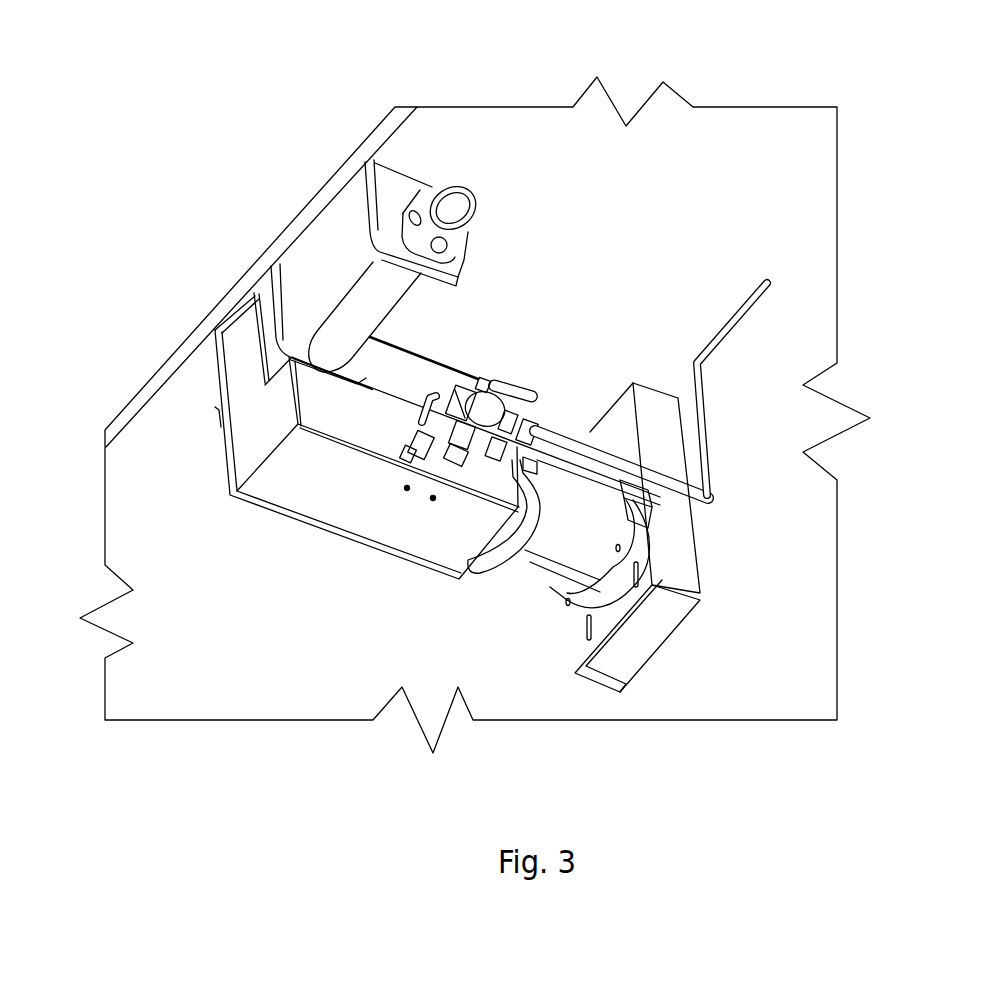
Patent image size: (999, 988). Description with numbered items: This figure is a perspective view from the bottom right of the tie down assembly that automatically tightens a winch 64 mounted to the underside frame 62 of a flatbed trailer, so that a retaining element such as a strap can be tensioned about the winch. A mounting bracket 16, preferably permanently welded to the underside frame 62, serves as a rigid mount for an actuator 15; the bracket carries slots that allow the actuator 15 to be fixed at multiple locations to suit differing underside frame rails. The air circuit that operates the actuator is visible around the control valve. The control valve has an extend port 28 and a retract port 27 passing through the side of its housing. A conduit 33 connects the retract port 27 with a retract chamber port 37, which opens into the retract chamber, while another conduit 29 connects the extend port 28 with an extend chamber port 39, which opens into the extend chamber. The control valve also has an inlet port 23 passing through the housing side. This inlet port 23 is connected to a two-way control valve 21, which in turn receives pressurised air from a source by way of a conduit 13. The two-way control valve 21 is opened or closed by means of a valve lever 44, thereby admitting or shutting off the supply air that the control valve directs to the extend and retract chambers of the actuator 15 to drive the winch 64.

The conduit 13 is at (778, 293).
The actuator 15 is at (580, 545).
The mounting bracket 16 is at (700, 555).
The two-way control valve 21 is at (483, 408).
The inlet port 23 is at (441, 457).
The retract port 27 is at (419, 460).
The extend port 28 is at (468, 466).
The conduit 29 is at (628, 545).
The conduit 33 is at (433, 393).
The retract chamber port 37 is at (536, 468).
The extend chamber port 39 is at (648, 528).
The valve lever 44 is at (517, 383).
The underside frame 62 is at (779, 337).
The winch 64 is at (285, 162).